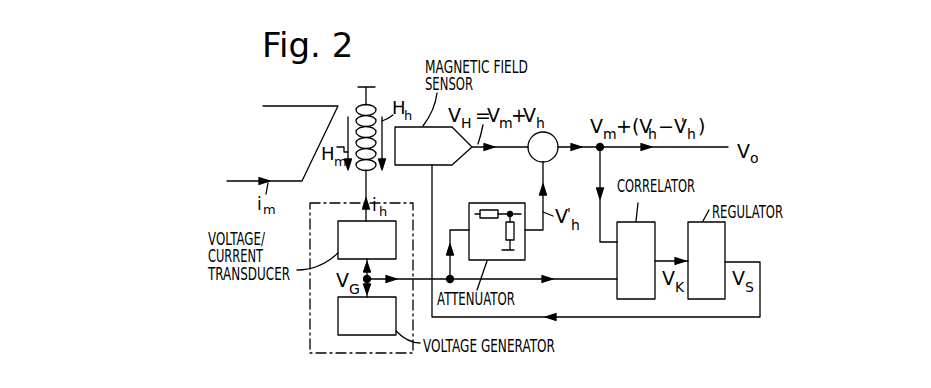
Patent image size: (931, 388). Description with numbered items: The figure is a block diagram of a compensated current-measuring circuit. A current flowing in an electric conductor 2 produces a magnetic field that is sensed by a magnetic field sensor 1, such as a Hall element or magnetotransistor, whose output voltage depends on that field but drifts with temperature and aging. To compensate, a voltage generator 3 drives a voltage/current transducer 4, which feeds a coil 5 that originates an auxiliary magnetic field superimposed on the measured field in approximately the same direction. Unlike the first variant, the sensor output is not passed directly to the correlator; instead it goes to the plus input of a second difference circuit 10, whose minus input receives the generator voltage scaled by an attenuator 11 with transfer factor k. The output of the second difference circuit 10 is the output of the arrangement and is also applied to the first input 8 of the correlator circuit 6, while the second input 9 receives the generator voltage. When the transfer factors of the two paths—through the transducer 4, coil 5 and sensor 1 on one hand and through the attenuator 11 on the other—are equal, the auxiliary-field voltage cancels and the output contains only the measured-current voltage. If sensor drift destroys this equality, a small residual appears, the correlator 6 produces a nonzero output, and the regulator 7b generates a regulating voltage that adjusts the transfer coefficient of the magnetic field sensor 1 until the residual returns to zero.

The magnetic field sensor 1 is at (450, 153).
The electric conductor 2 is at (288, 107).
The voltage generator 3 is at (347, 316).
The voltage/current transducer 4 is at (347, 238).
The coil 5 is at (376, 171).
The correlator circuit 6 is at (650, 241).
The regulator 7b is at (717, 242).
The first input of correlator 8 is at (608, 245).
The second input of correlator 9 is at (608, 283).
The second difference circuit 10 is at (547, 140).
The attenuator 11 is at (515, 249).